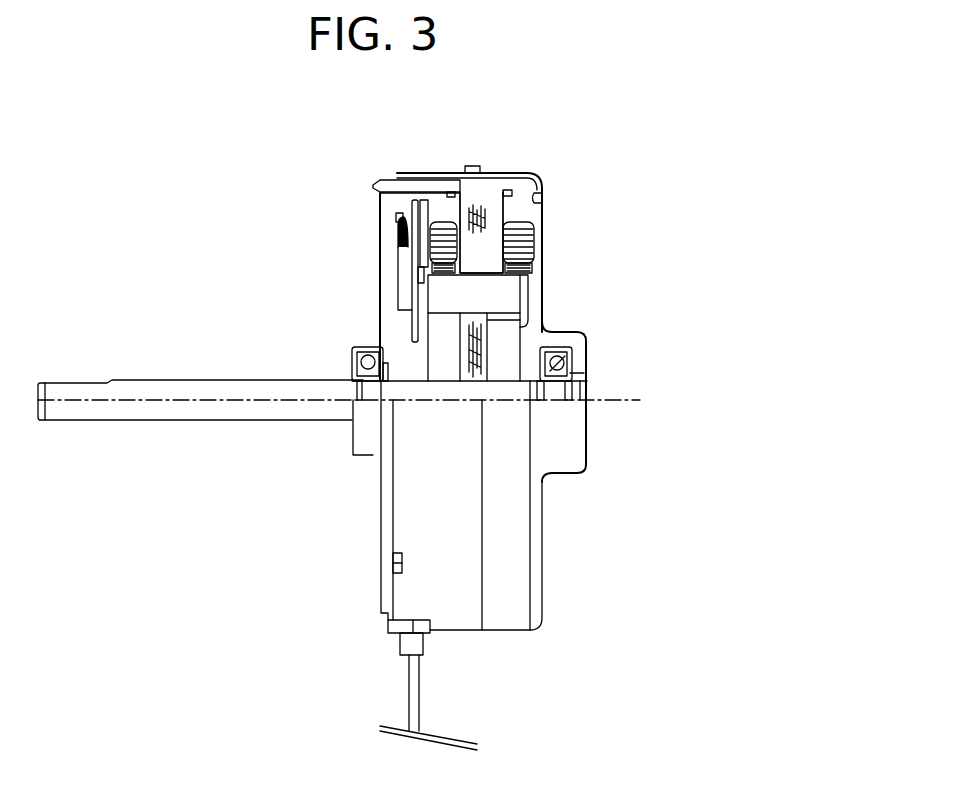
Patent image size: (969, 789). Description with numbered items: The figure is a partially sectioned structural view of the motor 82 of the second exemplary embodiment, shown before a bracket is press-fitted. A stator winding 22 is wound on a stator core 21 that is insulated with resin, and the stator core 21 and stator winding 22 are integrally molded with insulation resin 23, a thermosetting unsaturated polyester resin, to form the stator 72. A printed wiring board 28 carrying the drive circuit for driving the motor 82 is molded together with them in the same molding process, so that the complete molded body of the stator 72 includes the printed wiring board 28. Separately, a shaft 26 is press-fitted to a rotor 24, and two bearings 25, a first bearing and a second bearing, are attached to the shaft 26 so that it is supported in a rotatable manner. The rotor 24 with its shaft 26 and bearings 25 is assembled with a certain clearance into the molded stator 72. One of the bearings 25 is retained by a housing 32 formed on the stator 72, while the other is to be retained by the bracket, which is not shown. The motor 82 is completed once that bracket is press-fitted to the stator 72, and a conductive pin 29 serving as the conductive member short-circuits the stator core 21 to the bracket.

The stator core 21 is at (492, 217).
The stator winding 22 is at (447, 237).
The insulation resin 23 is at (528, 177).
The rotor 24 is at (478, 292).
The bearings 25 is at (540, 378).
The shaft 26 is at (268, 410).
The printed wiring board 28 is at (412, 257).
The conductive pin 29 is at (422, 183).
The housing 32 is at (575, 340).
The stator 72 is at (533, 215).
The motor 82 is at (515, 545).